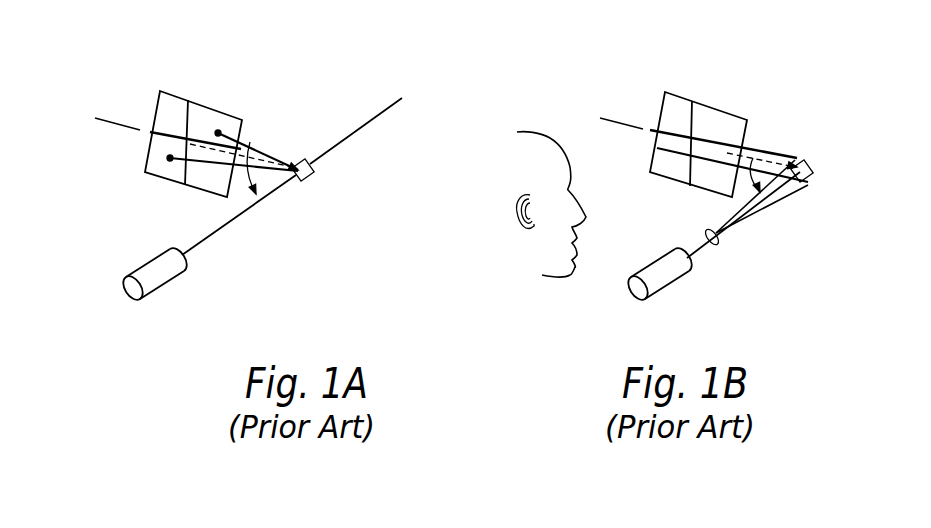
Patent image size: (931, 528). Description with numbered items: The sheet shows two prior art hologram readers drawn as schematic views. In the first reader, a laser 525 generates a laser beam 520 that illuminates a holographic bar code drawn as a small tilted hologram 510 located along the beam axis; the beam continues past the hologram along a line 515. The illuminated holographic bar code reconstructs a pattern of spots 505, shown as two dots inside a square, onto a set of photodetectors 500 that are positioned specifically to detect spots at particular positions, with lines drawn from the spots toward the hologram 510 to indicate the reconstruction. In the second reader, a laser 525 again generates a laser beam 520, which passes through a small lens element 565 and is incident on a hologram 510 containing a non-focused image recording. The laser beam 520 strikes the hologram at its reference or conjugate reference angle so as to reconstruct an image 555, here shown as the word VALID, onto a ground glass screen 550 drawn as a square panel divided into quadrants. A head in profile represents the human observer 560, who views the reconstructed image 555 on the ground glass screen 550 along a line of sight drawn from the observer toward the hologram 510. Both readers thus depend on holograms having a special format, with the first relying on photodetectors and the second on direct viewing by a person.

In FIG. 1A, the set of photodetectors 500 is at (156, 108).
In FIG. 1A, the pattern of spots 505 is at (170, 158).
In FIG. 1A, the hologram 510 is at (300, 160).
In FIG. 1B, the hologram 510 is at (803, 158).
In FIG. 1A, the optical axis line 515 is at (383, 112).
In FIG. 1A, the laser beam 520 is at (218, 230).
In FIG. 1B, the laser beam 520 is at (782, 203).
In FIG. 1A, the laser 525 is at (168, 283).
In FIG. 1B, the laser 525 is at (673, 283).
In FIG. 1B, the ground glass screen 550 is at (690, 110).
In FIG. 1B, the image 555 is at (670, 140).
In FIG. 1B, the human observer 560 is at (531, 147).
In FIG. 1B, the lens 565 is at (718, 243).